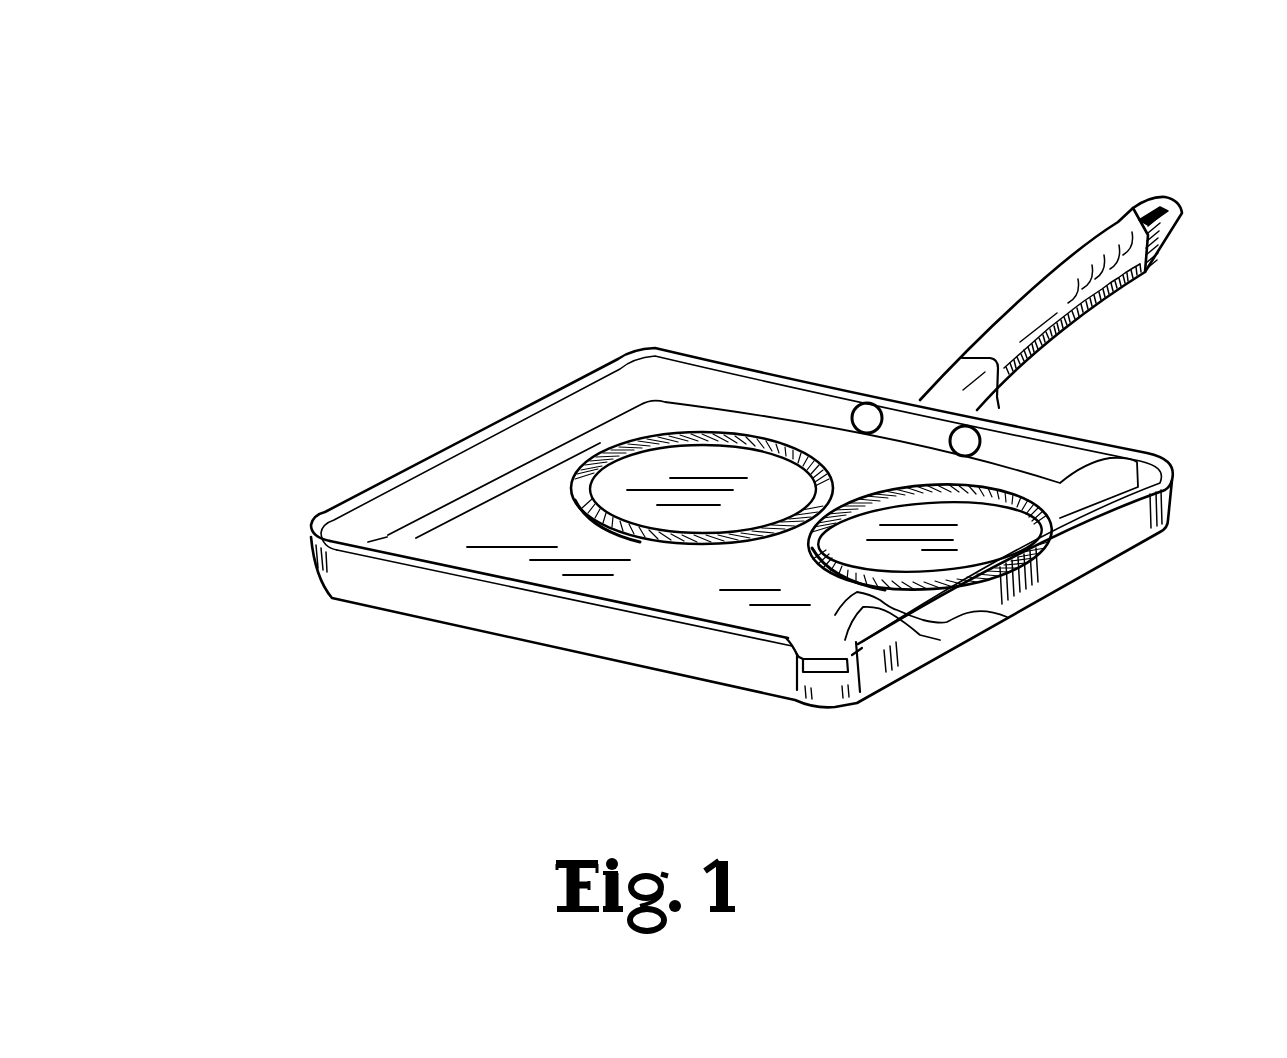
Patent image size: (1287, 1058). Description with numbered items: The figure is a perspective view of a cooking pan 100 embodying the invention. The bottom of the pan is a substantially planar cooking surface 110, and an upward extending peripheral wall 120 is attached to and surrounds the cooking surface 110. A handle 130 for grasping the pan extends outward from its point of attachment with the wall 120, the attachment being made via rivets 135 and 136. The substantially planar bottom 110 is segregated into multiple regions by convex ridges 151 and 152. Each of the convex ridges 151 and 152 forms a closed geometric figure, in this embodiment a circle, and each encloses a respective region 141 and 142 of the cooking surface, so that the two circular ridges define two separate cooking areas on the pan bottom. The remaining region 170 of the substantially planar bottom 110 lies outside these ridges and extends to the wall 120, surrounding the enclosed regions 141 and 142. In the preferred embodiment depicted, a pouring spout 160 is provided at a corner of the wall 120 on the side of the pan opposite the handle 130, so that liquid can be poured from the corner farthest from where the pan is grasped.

The cooking pan 100 is at (1205, 127).
The cooking surface 110 is at (538, 470).
The peripheral wall 120 is at (1088, 432).
The handle 130 is at (1068, 233).
The rivet 135 is at (862, 400).
The rivet 136 is at (1027, 417).
The enclosed region 141 is at (620, 483).
The enclosed region 142 is at (1010, 537).
The convex ridge 151 is at (572, 487).
The convex ridge 152 is at (1173, 478).
The pouring spout 160 is at (877, 590).
The remaining region 170 is at (1007, 617).